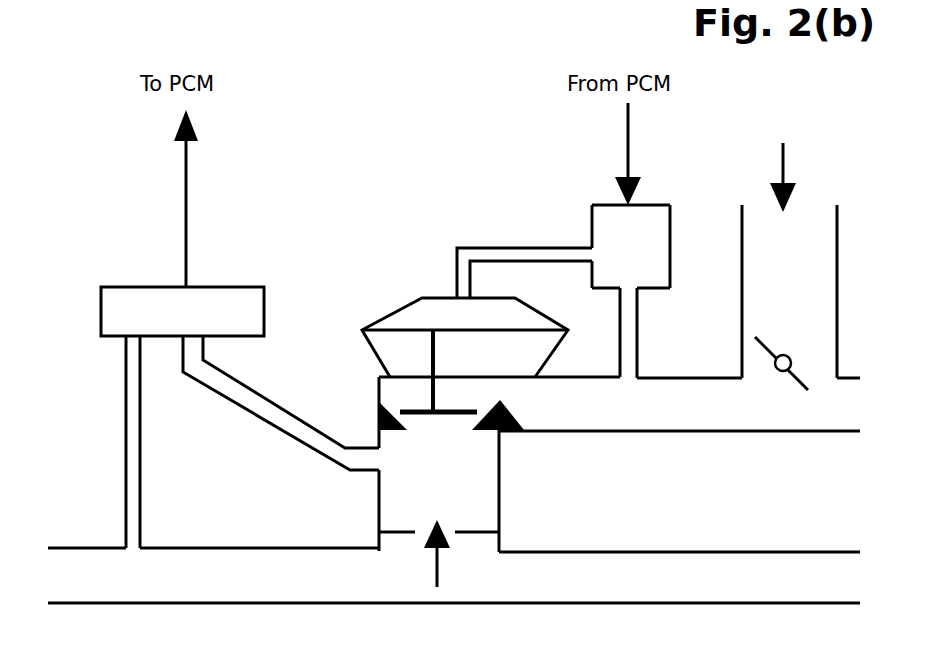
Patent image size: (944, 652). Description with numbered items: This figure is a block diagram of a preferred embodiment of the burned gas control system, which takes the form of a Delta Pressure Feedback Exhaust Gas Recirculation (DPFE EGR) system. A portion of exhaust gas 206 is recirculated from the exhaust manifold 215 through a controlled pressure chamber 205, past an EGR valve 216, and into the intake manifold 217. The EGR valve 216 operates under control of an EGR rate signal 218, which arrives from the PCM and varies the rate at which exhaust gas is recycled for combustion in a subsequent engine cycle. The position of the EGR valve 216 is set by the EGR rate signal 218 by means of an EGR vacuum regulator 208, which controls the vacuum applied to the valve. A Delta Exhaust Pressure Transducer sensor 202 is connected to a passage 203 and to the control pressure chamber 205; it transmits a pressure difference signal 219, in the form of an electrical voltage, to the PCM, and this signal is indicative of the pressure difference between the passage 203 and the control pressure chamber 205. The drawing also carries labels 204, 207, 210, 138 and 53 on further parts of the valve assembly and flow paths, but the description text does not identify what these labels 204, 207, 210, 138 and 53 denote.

The Delta Exhaust Pressure Transducer (DEPT) sensor 202 is at (190, 322).
The passage 203 is at (141, 529).
The valve diaphragm 204 is at (410, 302).
The controlled pressure chamber 205 is at (448, 485).
The exhaust gas 206 is at (440, 570).
The outlet passage 207 is at (482, 532).
The EGR vacuum regulator (EVR) 208 is at (644, 250).
The vacuum inlet 210 is at (785, 165).
The exhaust manifold 215 is at (278, 588).
The EGR valve 216 is at (436, 349).
The intake manifold 217 is at (645, 413).
The EGR rate signal 218 is at (631, 148).
The pressure difference signal 219 is at (186, 250).
The solenoid valve 138 is at (672, 221).
The switch 53 is at (792, 356).